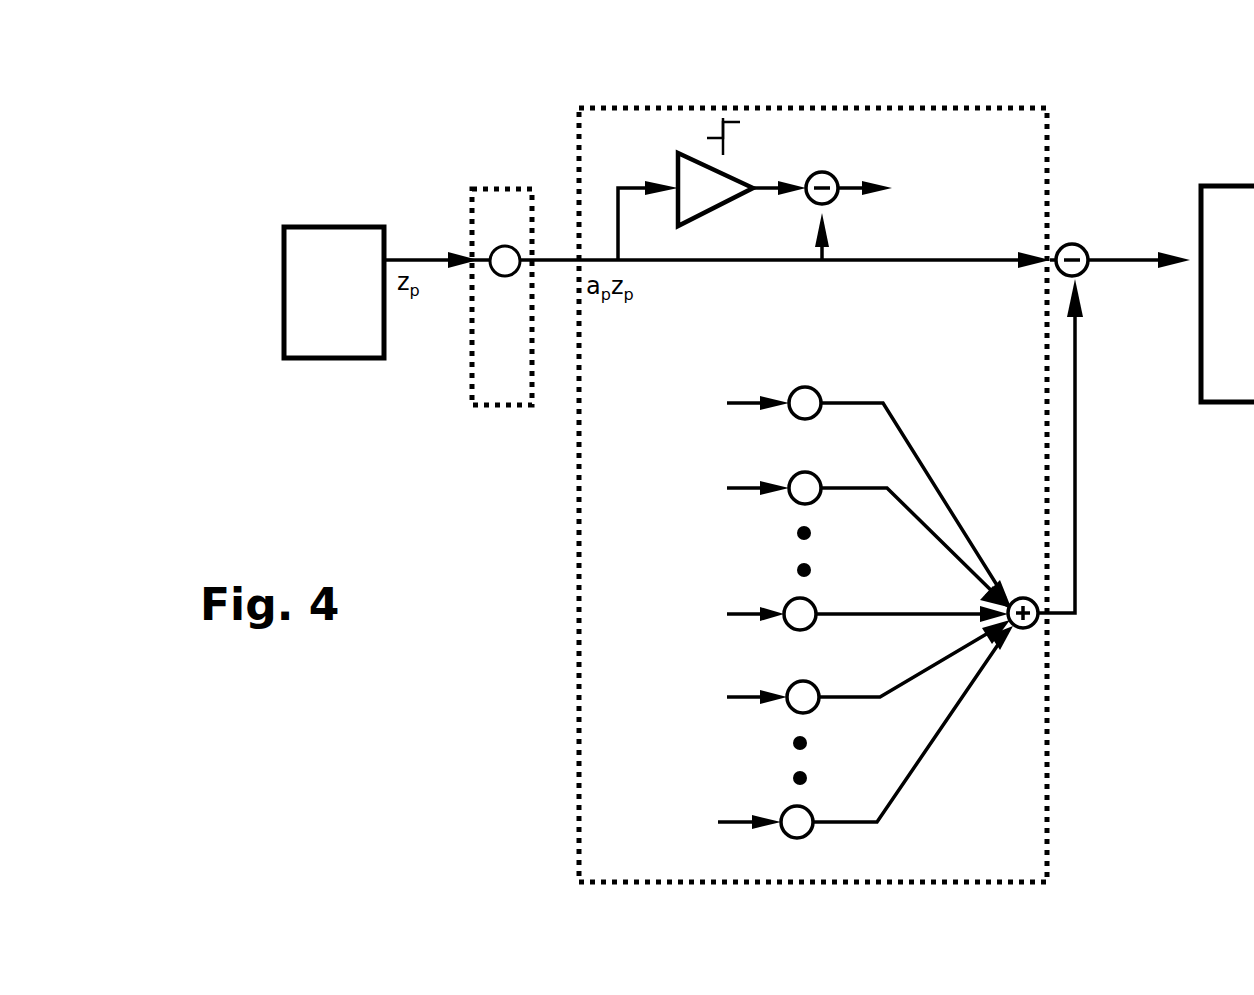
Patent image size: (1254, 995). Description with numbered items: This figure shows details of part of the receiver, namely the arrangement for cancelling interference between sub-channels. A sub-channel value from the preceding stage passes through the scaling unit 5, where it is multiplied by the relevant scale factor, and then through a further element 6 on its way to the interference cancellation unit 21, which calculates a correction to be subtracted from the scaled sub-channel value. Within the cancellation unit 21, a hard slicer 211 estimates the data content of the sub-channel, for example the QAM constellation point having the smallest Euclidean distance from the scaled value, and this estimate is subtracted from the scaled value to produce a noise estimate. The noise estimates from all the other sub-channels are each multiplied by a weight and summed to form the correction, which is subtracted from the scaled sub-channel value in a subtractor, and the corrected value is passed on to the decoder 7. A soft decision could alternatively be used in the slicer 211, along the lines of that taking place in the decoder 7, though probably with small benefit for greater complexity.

The scaling unit 5 is at (380, 185).
The multiplier by gain a_p 6 is at (515, 172).
The decoder 7 is at (1200, 183).
The interference cancellation unit 21 is at (573, 743).
The hard slicer 211 is at (681, 152).